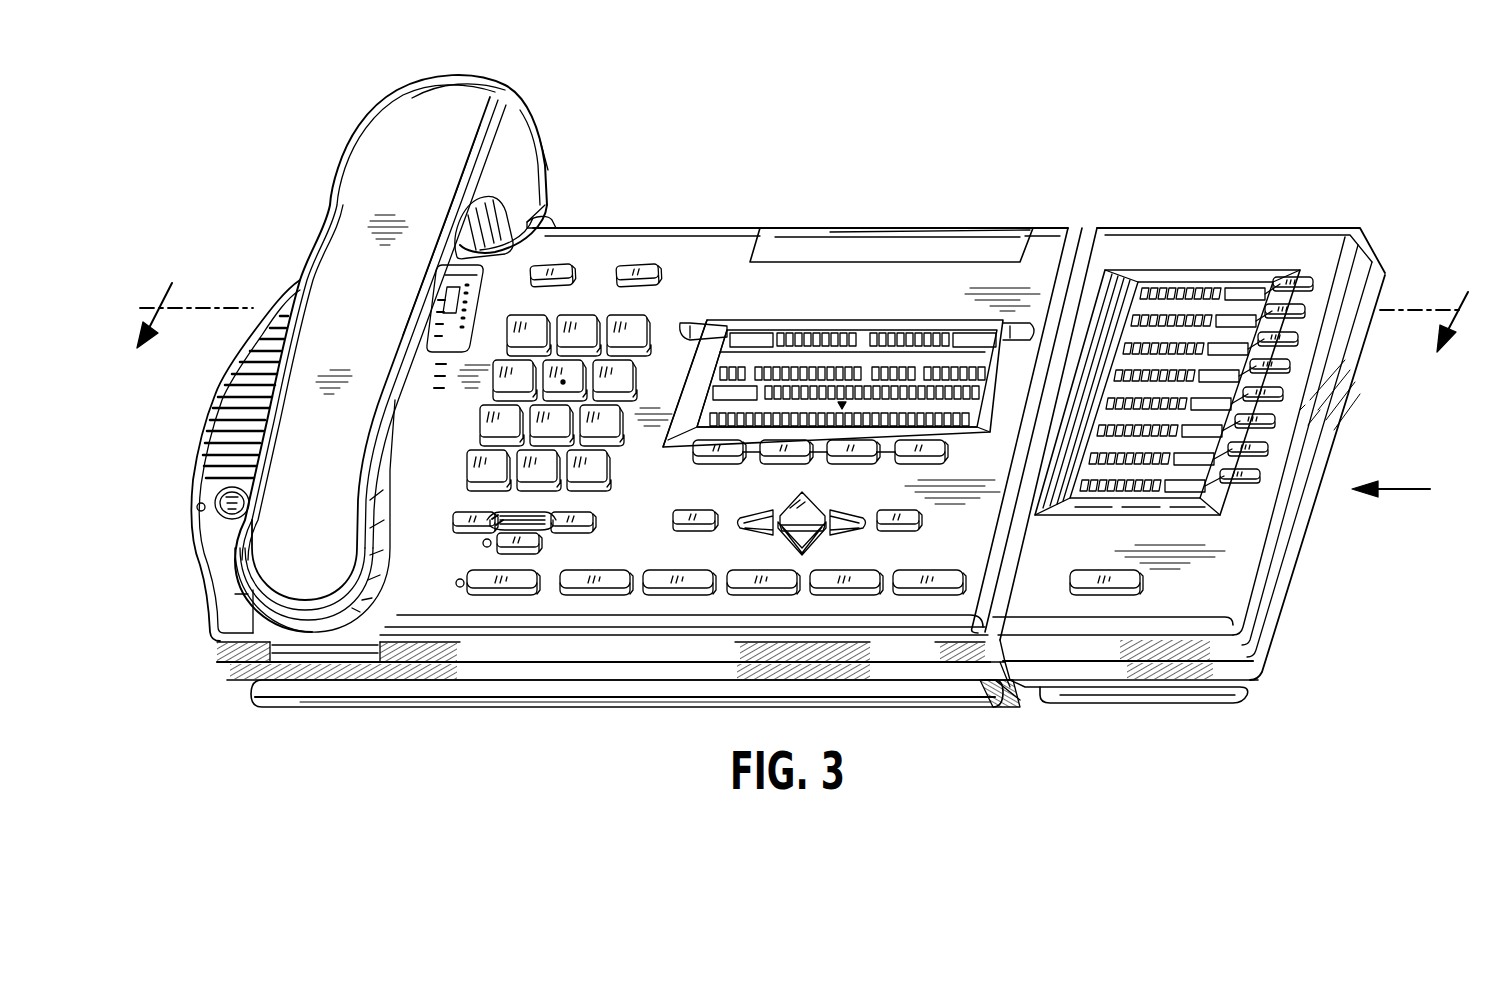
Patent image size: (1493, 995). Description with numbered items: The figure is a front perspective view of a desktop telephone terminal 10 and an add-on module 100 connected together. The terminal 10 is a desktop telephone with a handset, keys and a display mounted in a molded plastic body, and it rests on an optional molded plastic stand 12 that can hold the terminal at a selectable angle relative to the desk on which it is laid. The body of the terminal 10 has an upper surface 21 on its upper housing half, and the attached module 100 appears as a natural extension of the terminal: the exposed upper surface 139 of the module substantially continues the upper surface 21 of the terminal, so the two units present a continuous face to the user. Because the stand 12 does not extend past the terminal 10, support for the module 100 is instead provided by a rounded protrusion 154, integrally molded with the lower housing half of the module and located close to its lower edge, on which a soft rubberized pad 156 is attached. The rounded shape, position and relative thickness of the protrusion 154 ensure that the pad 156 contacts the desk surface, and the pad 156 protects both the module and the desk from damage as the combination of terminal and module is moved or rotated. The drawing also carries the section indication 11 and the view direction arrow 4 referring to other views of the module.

The desktop telephone terminal 10 is at (968, 200).
The upper surface 21 is at (1052, 250).
The upper surface 139 is at (1120, 252).
The add-on module 100 is at (1242, 200).
The section line 11- 11 is at (802, 308).
The viewing direction arrow 4 is at (1404, 492).
The stand 12 is at (923, 690).
The rounded protrusion 154 is at (1025, 690).
The soft rubberized pad 156 is at (1080, 700).